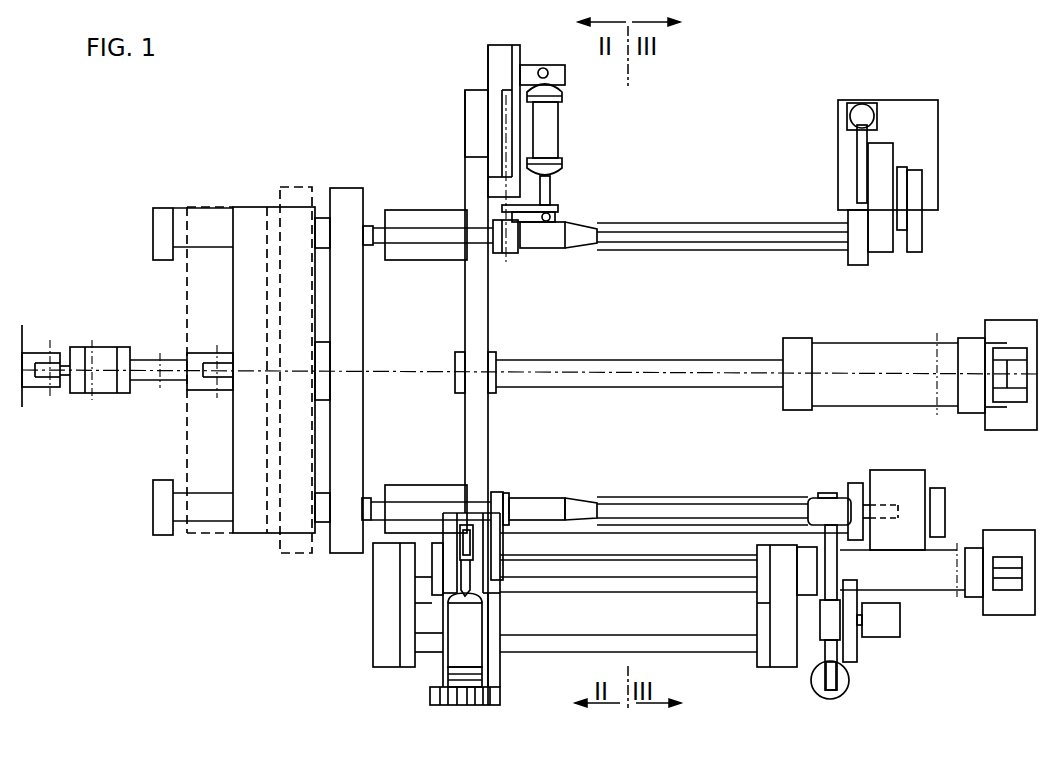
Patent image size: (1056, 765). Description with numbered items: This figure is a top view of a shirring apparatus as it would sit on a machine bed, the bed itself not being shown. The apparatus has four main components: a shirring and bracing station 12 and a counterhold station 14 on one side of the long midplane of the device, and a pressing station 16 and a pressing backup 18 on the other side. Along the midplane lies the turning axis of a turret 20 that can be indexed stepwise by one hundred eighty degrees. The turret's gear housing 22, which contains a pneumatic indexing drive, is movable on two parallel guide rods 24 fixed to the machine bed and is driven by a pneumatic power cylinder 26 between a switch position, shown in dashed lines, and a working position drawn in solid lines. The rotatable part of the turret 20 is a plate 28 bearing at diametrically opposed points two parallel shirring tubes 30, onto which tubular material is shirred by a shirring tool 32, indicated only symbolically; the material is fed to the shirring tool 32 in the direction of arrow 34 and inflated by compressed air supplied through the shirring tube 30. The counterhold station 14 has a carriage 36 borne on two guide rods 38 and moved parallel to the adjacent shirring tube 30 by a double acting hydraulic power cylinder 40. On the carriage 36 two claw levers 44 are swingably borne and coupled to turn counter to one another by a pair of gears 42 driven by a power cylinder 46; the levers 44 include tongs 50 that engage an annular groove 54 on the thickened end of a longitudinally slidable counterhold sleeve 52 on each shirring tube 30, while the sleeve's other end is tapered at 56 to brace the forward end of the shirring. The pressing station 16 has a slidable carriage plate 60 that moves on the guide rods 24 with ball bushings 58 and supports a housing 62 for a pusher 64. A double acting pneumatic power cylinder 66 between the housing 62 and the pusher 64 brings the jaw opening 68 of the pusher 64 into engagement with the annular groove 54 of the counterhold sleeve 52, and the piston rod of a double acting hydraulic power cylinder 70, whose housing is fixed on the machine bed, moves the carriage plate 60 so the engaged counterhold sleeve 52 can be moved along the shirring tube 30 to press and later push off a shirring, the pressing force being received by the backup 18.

The shirring and bracing station 12 is at (912, 626).
The counterhold station 14 is at (340, 655).
The pressing station 16 is at (430, 140).
The pressing backup 18 is at (945, 92).
The turret 20 is at (245, 165).
The gear housing 22 is at (263, 237).
The guide rods 24 is at (180, 226).
The pneumatic power cylinder 26 is at (98, 386).
The plate 28 is at (346, 212).
The shirring tubes 30 is at (713, 237).
The shirring tool 32 is at (903, 480).
The arrow 34 is at (952, 510).
The carriage 36 is at (497, 678).
The guide rods 38 is at (693, 587).
The double acting hydraulic power cylinder 40 is at (918, 577).
The pair of gears 42 is at (465, 572).
The claw levers 44 is at (465, 548).
The power cylinder 46 is at (460, 645).
The tongs 50 is at (501, 490).
The counterhold sleeve 52 is at (555, 240).
The annular groove 54 is at (513, 498).
The tapered end 56 is at (590, 512).
The ball bushings 58 is at (407, 218).
The carriage plate 60 is at (478, 335).
The housing 62 is at (498, 59).
The pusher 64 is at (505, 200).
The double acting pneumatic power cylinder 66 is at (548, 130).
The jaw opening 68 is at (505, 256).
The double acting hydraulic power cylinder 70 is at (905, 355).